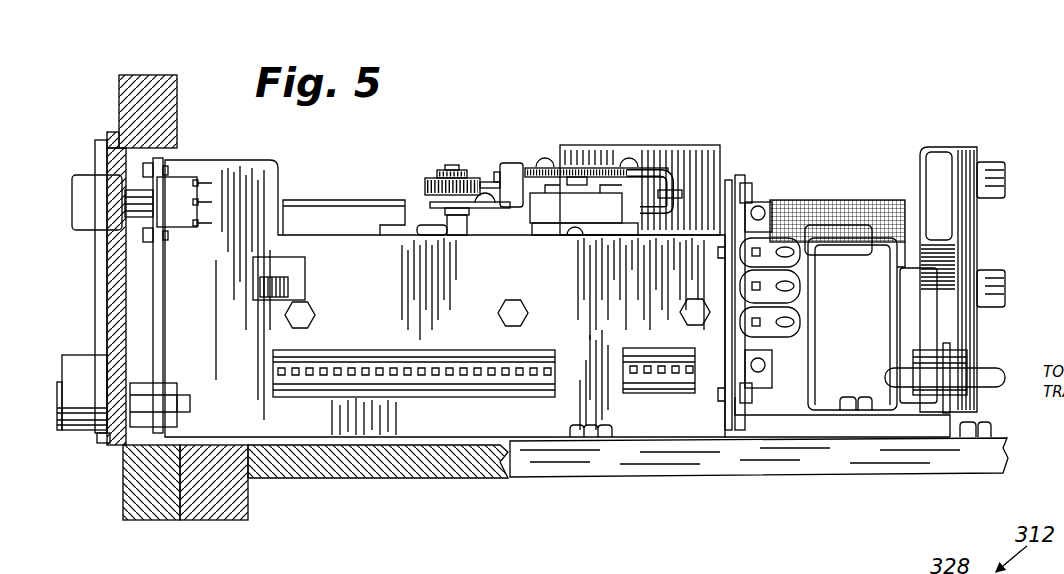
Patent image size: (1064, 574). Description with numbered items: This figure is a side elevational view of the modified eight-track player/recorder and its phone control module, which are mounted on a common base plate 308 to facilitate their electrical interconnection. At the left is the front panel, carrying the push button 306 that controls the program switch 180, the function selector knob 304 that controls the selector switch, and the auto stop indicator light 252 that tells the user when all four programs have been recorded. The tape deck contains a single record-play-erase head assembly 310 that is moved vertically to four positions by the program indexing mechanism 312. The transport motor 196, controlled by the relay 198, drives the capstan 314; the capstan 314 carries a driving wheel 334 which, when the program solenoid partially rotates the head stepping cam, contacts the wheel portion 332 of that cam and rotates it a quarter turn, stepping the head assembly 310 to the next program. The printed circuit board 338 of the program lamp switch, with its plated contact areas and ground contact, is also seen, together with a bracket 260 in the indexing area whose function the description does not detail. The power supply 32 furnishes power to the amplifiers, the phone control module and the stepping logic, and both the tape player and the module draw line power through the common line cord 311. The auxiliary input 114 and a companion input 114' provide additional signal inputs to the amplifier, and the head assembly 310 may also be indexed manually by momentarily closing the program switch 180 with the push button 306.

The power supply 32 is at (880, 227).
The auxiliary input 114 is at (1020, 177).
The control knob 114' is at (1014, 275).
The program switch 180 is at (182, 178).
The transport motor 196 is at (692, 147).
The relay 198 is at (822, 228).
The auto stop indicator light 252 is at (138, 383).
The bracket 260 is at (573, 177).
The function selector knob 304 is at (80, 423).
The push button 306 is at (88, 175).
The base plate 308 is at (543, 468).
The head assembly 310 is at (430, 223).
The line cord 311 is at (990, 368).
The program indexing mechanism 312 is at (501, 132).
The capstan 314 is at (453, 230).
The wheel portion 332 is at (486, 185).
The driving wheel 334 is at (420, 183).
The printed circuit board 338 is at (612, 170).